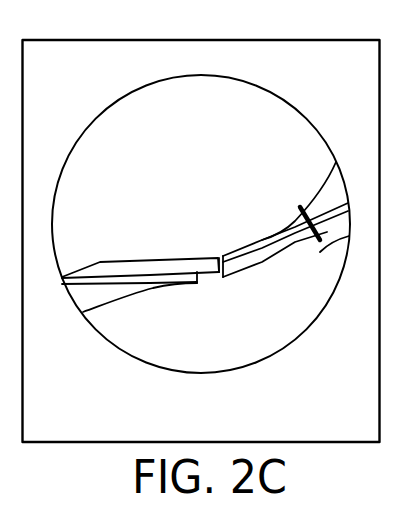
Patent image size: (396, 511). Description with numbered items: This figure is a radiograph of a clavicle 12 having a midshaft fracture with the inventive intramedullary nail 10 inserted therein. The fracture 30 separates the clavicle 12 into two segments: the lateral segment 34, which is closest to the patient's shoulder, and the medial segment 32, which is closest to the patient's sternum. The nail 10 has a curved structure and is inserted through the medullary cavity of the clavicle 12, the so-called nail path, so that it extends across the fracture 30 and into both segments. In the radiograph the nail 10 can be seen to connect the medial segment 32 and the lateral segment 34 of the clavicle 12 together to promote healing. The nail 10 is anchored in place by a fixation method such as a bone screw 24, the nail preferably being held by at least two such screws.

The intramedullary nail 10 is at (197, 284).
The clavicle 12 is at (132, 258).
The bone screw 24 is at (320, 241).
The fracture 30 is at (222, 256).
The medial segment 32 is at (265, 237).
The lateral segment 34 is at (158, 262).